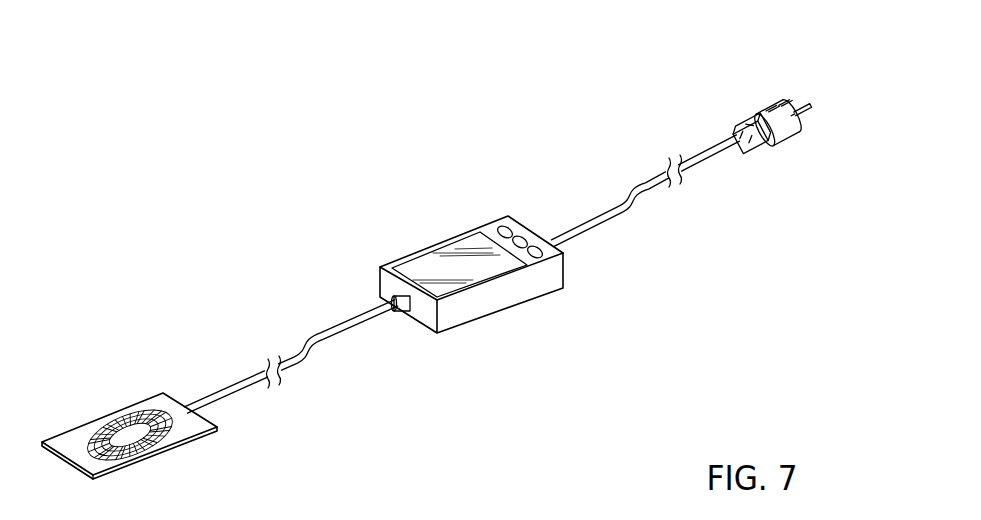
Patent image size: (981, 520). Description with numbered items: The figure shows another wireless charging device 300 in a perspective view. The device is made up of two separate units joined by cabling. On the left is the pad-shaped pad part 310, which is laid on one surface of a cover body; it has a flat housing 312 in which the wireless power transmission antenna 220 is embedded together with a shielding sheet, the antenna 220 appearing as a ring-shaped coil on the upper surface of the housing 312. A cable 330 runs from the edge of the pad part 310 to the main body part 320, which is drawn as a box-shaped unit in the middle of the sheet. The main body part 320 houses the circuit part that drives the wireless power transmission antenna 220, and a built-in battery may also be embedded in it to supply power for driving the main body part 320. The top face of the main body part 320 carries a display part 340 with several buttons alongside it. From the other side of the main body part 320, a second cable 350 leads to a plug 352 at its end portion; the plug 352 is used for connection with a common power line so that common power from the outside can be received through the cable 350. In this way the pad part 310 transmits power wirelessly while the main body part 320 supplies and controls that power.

The wireless power transmission antenna 220 is at (107, 423).
The wireless charging device 300 is at (435, 129).
The pad part 310 is at (137, 398).
The housing 312 is at (171, 413).
The main body part 320 is at (503, 317).
The cable 330 is at (262, 378).
The display part 340 is at (437, 263).
The cable 350 is at (602, 223).
The plug 352 is at (787, 157).